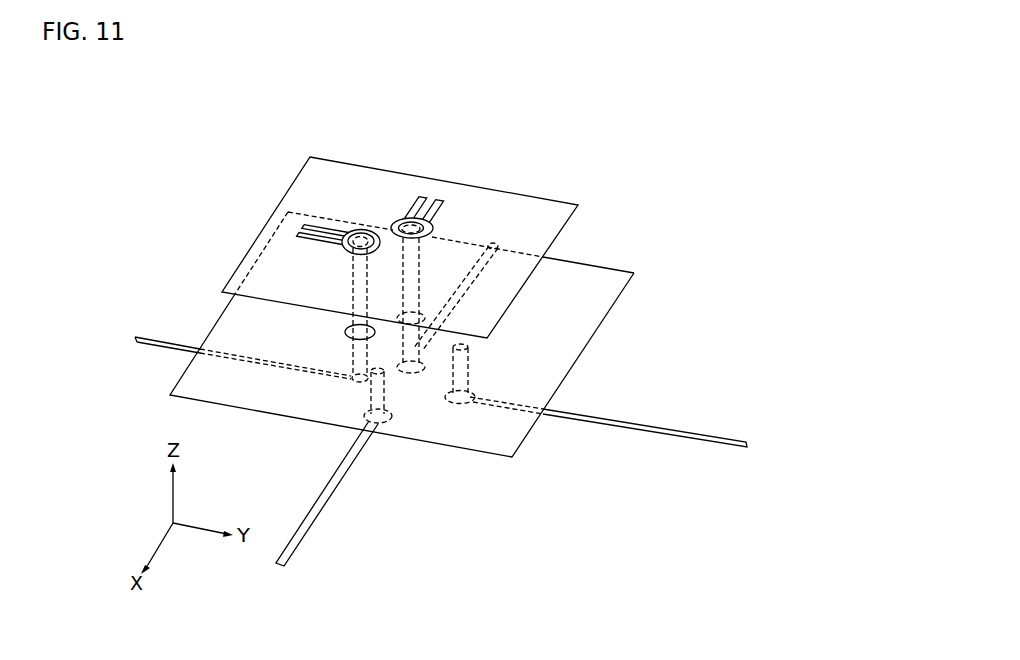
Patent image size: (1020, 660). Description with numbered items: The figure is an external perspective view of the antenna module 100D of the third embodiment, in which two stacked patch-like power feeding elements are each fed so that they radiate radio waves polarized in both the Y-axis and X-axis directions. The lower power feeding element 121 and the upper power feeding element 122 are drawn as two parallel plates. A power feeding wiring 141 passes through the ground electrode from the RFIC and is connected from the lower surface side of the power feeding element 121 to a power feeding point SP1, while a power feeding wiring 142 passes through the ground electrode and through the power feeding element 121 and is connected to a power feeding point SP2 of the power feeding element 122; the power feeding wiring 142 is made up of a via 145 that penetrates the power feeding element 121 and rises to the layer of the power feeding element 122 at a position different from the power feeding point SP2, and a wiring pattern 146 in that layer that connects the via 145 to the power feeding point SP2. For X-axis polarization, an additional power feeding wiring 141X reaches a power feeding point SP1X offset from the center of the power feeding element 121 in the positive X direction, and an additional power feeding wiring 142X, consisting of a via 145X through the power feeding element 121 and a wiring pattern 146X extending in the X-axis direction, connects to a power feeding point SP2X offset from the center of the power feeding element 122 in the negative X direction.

The antenna module 100D is at (694, 136).
The power feeding element 121 is at (235, 325).
The power feeding element 122 is at (328, 187).
The power feeding wiring 141 is at (650, 434).
The power feeding wiring 141X is at (320, 520).
The power feeding wiring 142 is at (150, 345).
The power feeding wiring 142X is at (493, 243).
The via 145 is at (350, 323).
The via 145X is at (412, 283).
The wiring pattern 146 is at (313, 225).
The wiring pattern 146X is at (418, 197).
The power feeding point SP1 is at (458, 349).
The power feeding point SP1X is at (385, 376).
The power feeding point SP2 is at (313, 233).
The power feeding point SP2X is at (428, 198).